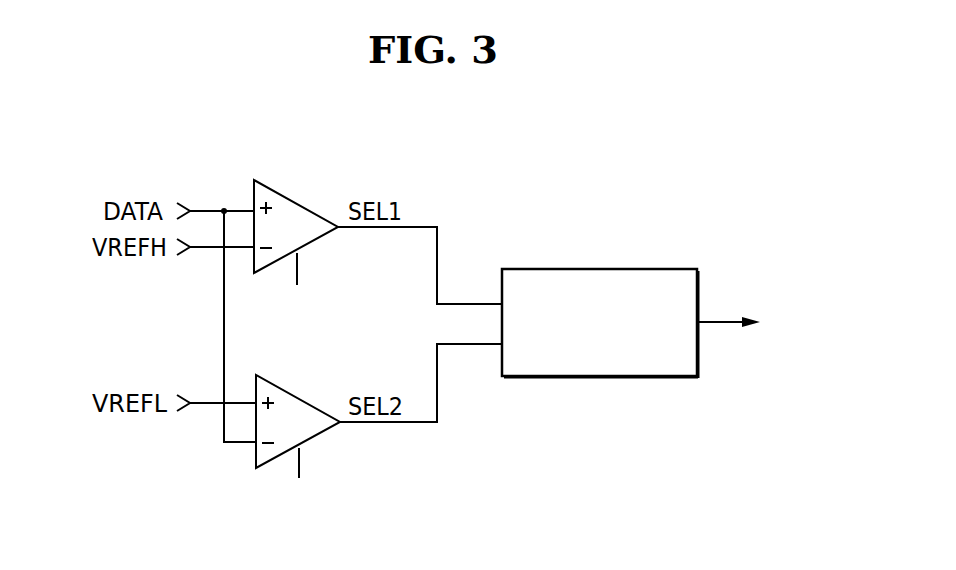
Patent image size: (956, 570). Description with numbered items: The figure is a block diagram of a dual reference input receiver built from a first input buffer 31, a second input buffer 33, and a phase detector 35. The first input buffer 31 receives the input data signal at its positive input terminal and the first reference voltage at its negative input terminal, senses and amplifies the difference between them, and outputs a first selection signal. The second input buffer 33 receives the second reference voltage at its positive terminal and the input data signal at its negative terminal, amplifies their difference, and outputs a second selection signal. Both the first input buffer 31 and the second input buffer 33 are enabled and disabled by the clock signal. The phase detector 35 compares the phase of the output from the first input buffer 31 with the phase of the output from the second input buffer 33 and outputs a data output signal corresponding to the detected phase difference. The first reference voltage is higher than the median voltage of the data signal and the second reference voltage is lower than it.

The first input buffer 31 is at (297, 201).
The second input buffer 33 is at (302, 396).
The phase detector 35 is at (623, 268).